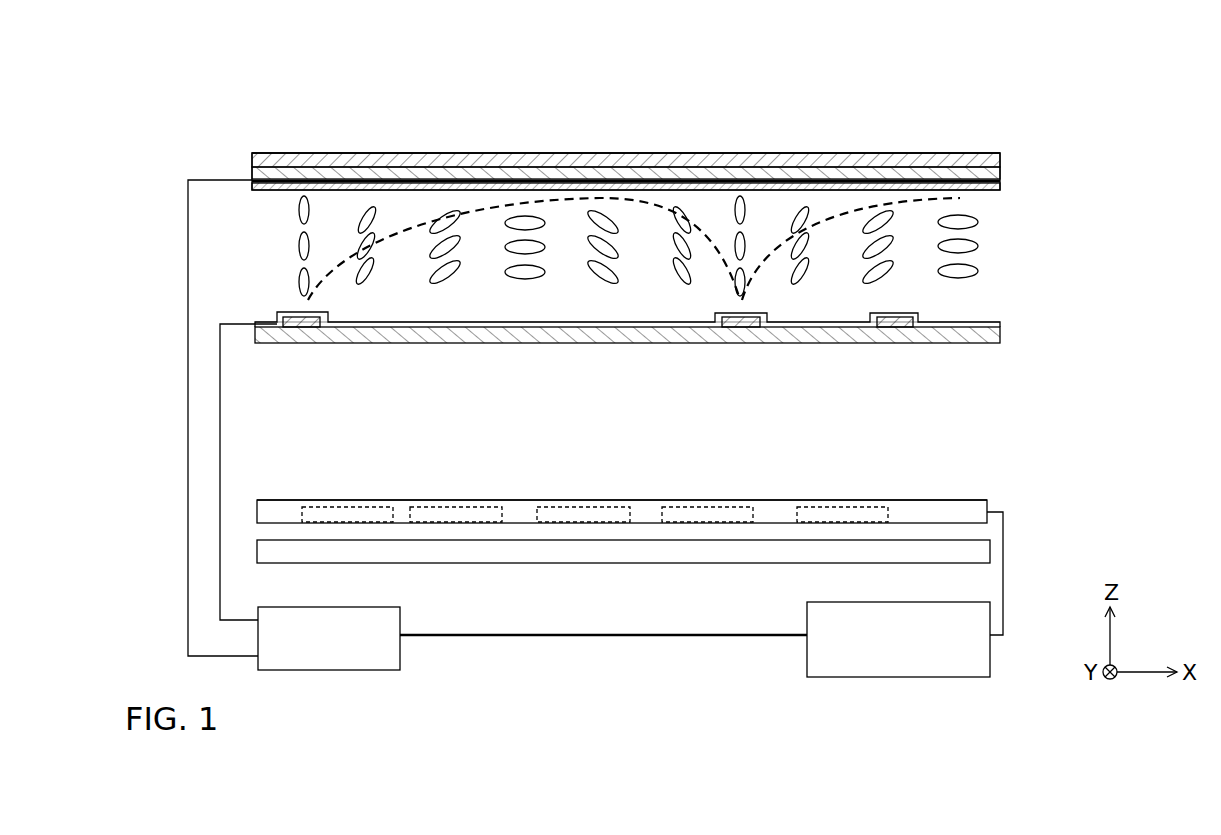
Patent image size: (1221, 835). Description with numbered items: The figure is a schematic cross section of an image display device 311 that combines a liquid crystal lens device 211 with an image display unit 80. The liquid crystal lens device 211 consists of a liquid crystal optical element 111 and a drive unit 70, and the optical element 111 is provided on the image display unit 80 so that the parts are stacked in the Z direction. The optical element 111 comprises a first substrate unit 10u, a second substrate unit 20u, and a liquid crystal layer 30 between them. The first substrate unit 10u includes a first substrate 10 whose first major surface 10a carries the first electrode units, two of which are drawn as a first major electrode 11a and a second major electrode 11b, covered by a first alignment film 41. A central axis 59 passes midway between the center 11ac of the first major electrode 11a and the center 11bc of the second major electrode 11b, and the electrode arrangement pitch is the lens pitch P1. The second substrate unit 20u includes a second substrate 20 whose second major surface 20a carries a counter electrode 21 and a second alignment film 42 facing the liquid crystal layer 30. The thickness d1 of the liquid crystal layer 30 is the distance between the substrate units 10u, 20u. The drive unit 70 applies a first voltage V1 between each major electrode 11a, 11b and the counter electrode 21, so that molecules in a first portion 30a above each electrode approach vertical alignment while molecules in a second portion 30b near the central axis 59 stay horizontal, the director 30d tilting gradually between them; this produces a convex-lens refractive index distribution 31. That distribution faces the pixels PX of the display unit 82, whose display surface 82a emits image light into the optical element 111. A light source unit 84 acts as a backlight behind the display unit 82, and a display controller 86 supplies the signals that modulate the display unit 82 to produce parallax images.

The liquid crystal layer 30 is at (1042, 428).
The second substrate unit 20u is at (1068, 125).
The second substrate 20 is at (995, 158).
The counter electrode 21 is at (1000, 174).
The second alignment film 42 is at (995, 188).
The second major surface 20a is at (933, 160).
The liquid crystal lens device 211 is at (243, 143).
The liquid crystal optical element 111 is at (1010, 112).
The first substrate unit 10u is at (1068, 300).
The first substrate 10 is at (998, 336).
The first alignment film 41 is at (995, 323).
The first major surface 10a is at (970, 325).
The first major electrode 11a is at (308, 330).
The second major electrode 11b is at (730, 330).
The refractive index distribution 31 is at (428, 200).
The image display device 311 is at (842, 95).
The first portion 30a is at (735, 200).
The second portion 30b is at (507, 218).
The central axis 59 is at (523, 300).
The director 30d is at (805, 210).
The thickness of the liquid crystal layer d1 is at (286, 192).
The first voltage V1 is at (550, 300).
The lens pitch P1 is at (740, 426).
The center of the first major electrode 11ac is at (302, 300).
The center of the second major electrode 11bc is at (740, 300).
The image display unit 80 is at (800, 715).
The display unit 82 is at (652, 513).
The display surface 82a is at (875, 500).
The pixel PX is at (373, 500).
The light source unit 84 is at (750, 552).
The display controller 86 is at (838, 647).
The drive unit 70 is at (362, 648).